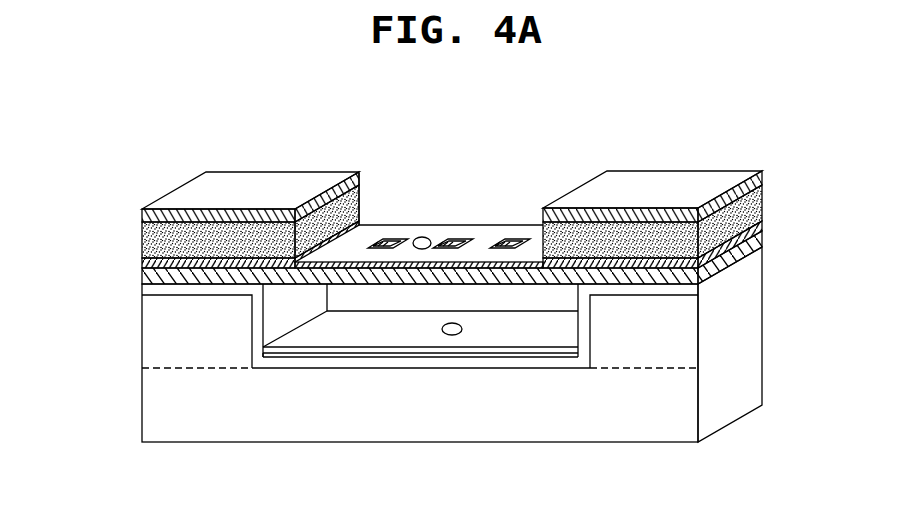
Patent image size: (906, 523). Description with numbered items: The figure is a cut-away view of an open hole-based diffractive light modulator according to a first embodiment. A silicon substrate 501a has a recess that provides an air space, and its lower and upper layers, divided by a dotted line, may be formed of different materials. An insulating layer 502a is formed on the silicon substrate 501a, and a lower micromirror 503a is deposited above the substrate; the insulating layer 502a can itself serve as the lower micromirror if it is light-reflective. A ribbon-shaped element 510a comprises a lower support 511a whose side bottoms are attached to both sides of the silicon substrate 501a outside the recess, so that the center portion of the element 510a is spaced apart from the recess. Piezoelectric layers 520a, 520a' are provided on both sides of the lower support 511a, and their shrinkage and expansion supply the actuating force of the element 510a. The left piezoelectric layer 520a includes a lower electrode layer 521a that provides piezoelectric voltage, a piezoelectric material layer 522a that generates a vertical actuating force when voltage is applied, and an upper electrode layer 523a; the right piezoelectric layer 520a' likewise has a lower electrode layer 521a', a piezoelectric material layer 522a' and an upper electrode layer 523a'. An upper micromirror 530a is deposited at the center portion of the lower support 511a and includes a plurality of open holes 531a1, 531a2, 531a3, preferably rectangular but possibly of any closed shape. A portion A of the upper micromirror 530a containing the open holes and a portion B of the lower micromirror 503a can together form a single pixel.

The silicon substrate 501a is at (575, 437).
The insulating layer 502a is at (498, 360).
The lower micromirror 503a is at (322, 350).
The portion of the lower micromirror B is at (448, 336).
The element 510a is at (65, 202).
The lower support 511a is at (142, 279).
The piezoelectric layer 520a is at (306, 138).
The lower electrode layer 521a is at (342, 194).
The piezoelectric material layer 522a is at (280, 178).
The upper electrode layer 523a is at (267, 149).
The piezoelectric layer 520a' is at (723, 198).
The lower electrode layer 521a' is at (690, 242).
The piezoelectric material layer 522a' is at (690, 221).
The upper electrode layer 523a' is at (690, 193).
The upper micromirror 530a is at (493, 232).
The open hole 531a1 is at (400, 238).
The open hole 531a2 is at (464, 238).
The open hole 531a3 is at (521, 238).
The portion of the upper micromirror A is at (428, 238).